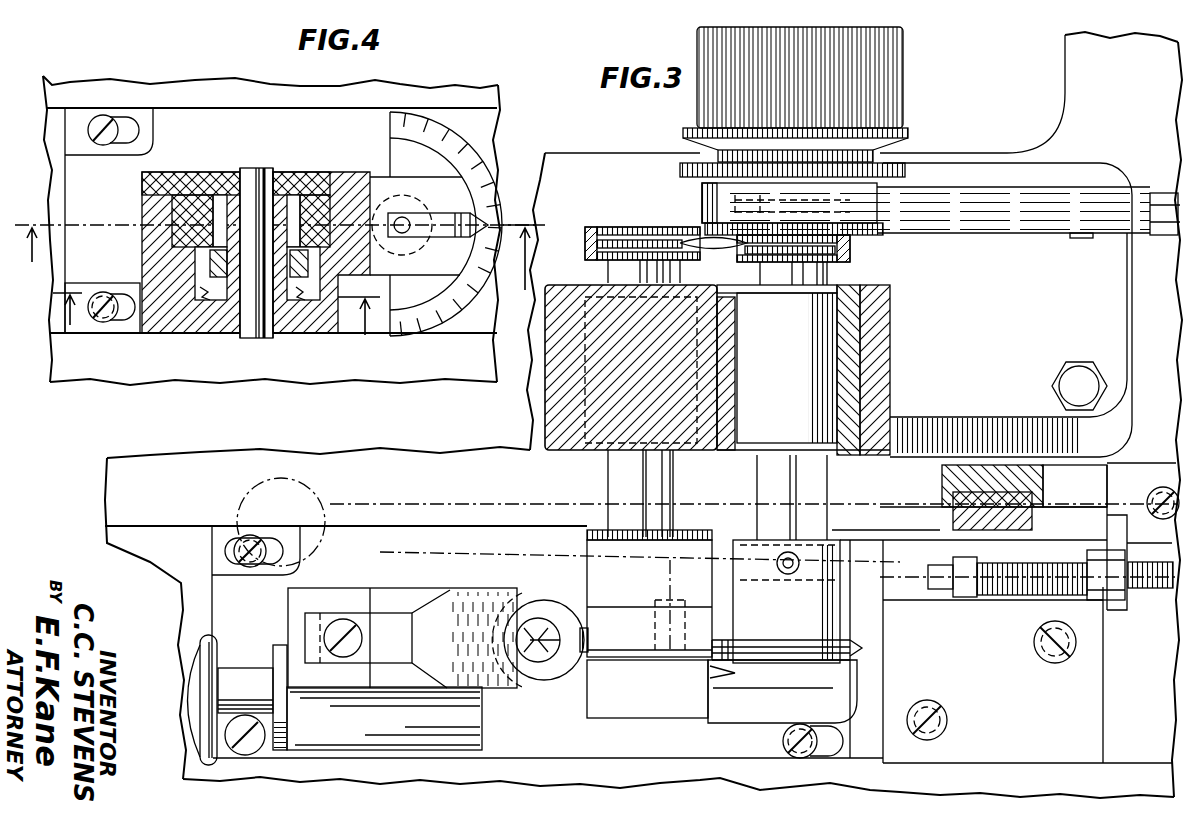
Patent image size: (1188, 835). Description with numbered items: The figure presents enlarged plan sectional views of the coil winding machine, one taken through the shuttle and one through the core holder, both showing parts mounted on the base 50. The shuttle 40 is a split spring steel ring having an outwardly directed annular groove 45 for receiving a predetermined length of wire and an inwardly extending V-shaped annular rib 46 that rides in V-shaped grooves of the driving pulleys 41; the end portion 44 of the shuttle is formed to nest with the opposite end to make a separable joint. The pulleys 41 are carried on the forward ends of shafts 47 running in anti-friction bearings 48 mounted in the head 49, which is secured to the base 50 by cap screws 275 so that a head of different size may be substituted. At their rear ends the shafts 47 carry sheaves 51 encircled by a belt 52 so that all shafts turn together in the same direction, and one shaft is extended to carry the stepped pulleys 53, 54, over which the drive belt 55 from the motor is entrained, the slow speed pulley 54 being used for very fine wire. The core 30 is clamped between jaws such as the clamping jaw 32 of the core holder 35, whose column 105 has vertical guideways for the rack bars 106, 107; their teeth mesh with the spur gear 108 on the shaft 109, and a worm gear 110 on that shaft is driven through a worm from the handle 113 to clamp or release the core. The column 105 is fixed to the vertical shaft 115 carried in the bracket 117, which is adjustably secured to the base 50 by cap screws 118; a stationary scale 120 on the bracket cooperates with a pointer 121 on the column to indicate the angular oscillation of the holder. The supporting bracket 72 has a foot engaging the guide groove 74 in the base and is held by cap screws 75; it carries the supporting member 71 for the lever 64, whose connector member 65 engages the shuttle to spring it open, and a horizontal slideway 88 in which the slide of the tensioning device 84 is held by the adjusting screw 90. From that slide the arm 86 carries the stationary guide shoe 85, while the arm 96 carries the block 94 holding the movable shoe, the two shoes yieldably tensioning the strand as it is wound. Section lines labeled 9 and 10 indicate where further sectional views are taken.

In FIG. 4, the base 50 is at (108, 378).
In FIG. 3, the base 50 is at (1068, 55).
In FIG. 4, the guide groove 74 is at (50, 122).
In FIG. 3, the guide groove 74 is at (110, 534).
In FIG. 4, the cap screws 118 is at (100, 108).
In FIG. 3, the cap screws 118 is at (238, 536).
In FIG. 4, the bracket 117 is at (180, 115).
In FIG. 3, the bracket 117 is at (385, 557).
In FIG. 4, the stationary scale 120 is at (472, 108).
In FIG. 4, the pointer 121 is at (438, 213).
In FIG. 4, the vertical shaft 115 is at (412, 243).
In FIG. 4, the rack bar 106 is at (186, 203).
In FIG. 4, the spur gear 108 is at (290, 200).
In FIG. 4, the rack bar 107 is at (328, 197).
In FIG. 4, the column 105 is at (142, 250).
In FIG. 3, the column 105 is at (307, 752).
In FIG. 4, the worm gear 110 is at (208, 302).
In FIG. 4, the shaft 109 is at (262, 333).
In FIG. 4, the section line 10- 10 is at (279, 260).
In FIG. 4, the section line 9- 9 is at (214, 314).
In FIG. 3, the stepped pulley 54 is at (905, 135).
In FIG. 3, the stepped pulley 53 is at (870, 235).
In FIG. 3, the drive belt 55 is at (995, 233).
In FIG. 3, the belt 52 is at (583, 240).
In FIG. 3, the sheaves 51 is at (618, 232).
In FIG. 3, the anti-friction bearings 48 is at (835, 322).
In FIG. 3, the head 49 is at (882, 350).
In FIG. 3, the cap screws 275 is at (1075, 365).
In FIG. 3, the supporting bracket 72 is at (1097, 477).
In FIG. 3, the slideway 88 is at (1112, 515).
In FIG. 3, the supporting member 71 is at (1040, 515).
In FIG. 3, the adjusting screw 90 is at (1148, 595).
In FIG. 3, the cap screws 75 is at (1055, 665).
In FIG. 3, the shafts 47 is at (765, 484).
In FIG. 3, the arm 86 is at (735, 548).
In FIG. 3, the connector member 65 is at (683, 574).
In FIG. 3, the guide shoe 85 is at (595, 605).
In FIG. 3, the block 94 is at (598, 702).
In FIG. 3, the arm 96 is at (710, 720).
In FIG. 3, the tensioning device 84 is at (729, 692).
In FIG. 3, the driving pulleys 41 is at (712, 656).
In FIG. 3, the annular rib 46 is at (795, 662).
In FIG. 3, the annular groove 45 is at (870, 648).
In FIG. 3, the shuttle 40 is at (872, 668).
In FIG. 3, the lever 64 is at (310, 503).
In FIG. 3, the clamping jaw 32 is at (460, 605).
In FIG. 3, the core holder 35 is at (268, 623).
In FIG. 3, the end portion 44 is at (548, 602).
In FIG. 3, the core 30 is at (542, 682).
In FIG. 3, the handle 113 is at (198, 650).